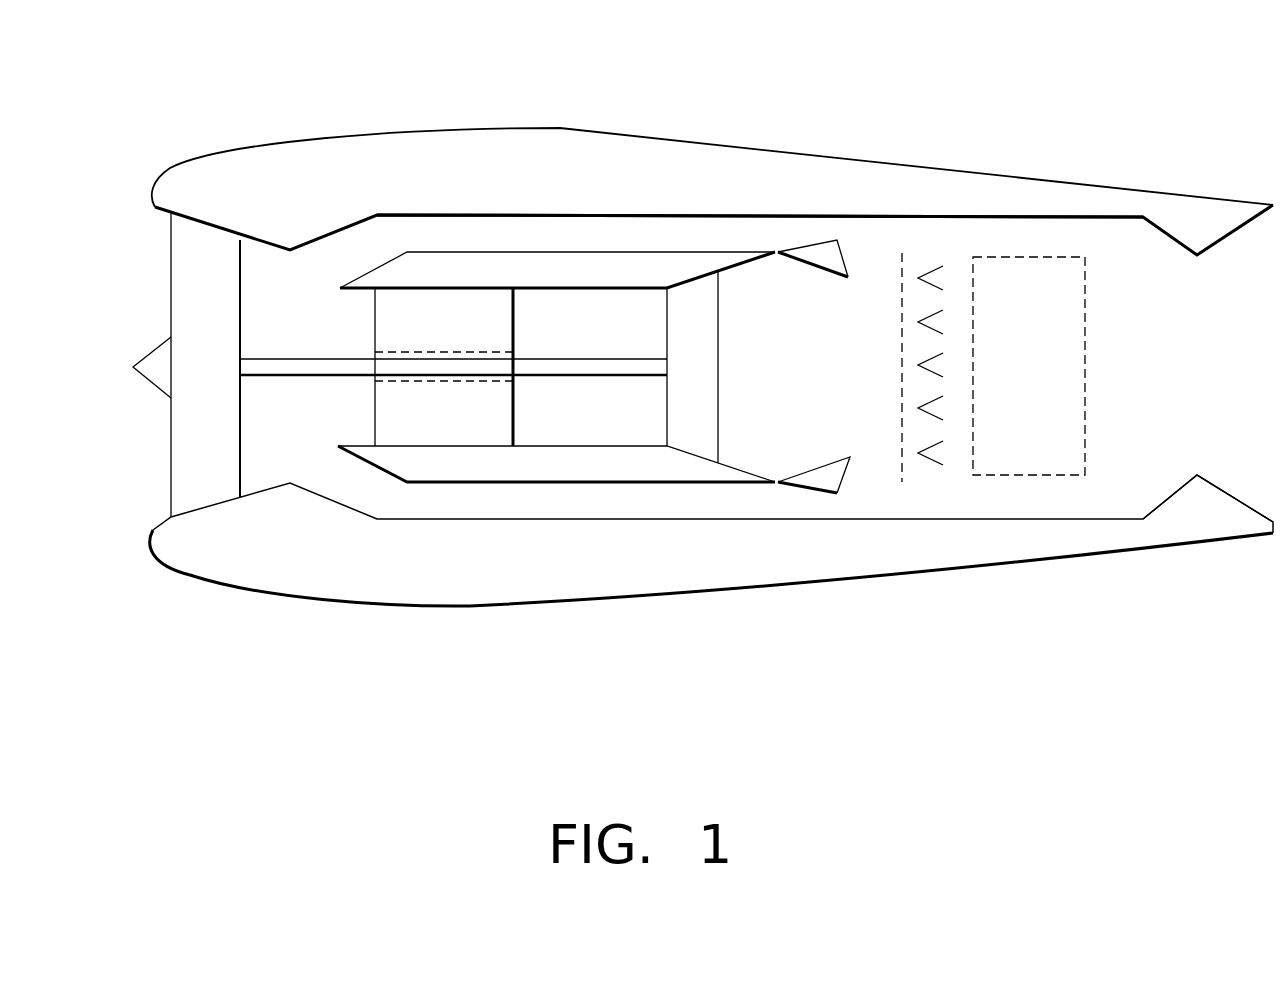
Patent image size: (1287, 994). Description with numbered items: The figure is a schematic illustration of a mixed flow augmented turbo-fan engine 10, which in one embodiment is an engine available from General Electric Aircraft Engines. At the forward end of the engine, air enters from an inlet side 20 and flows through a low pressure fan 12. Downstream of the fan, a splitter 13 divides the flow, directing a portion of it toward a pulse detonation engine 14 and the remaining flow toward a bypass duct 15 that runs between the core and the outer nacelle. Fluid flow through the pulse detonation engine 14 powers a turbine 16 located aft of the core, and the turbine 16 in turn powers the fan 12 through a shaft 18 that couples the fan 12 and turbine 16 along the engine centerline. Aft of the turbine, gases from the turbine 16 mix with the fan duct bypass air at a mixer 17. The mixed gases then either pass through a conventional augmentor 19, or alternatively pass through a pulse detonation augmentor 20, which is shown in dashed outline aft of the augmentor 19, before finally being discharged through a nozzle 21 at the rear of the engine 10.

The mixed flow augmented turbo-fan engine 10 is at (276, 81).
The low pressure fan 12 is at (217, 478).
The splitter 13 is at (377, 268).
The pulse detonation engine 14 is at (453, 335).
The bypass duct 15 is at (553, 247).
The turbine 16 is at (710, 352).
The mixer 17 is at (803, 224).
The shaft 18 is at (597, 355).
The conventional augmentor 19 is at (922, 272).
The inlet side 20 is at (164, 279).
The nozzle 21 is at (1214, 382).